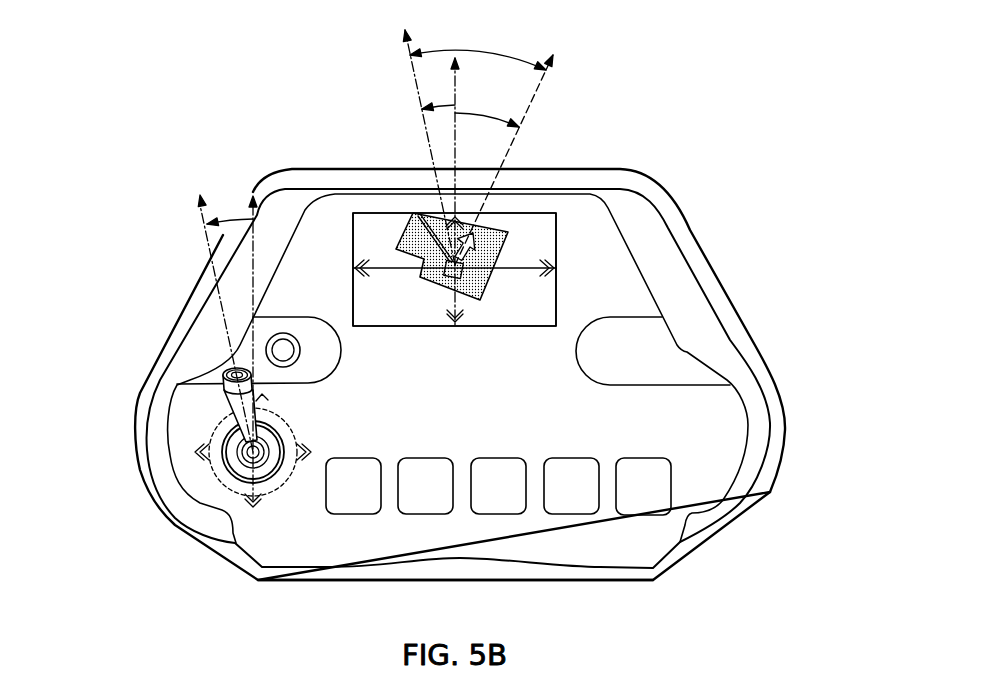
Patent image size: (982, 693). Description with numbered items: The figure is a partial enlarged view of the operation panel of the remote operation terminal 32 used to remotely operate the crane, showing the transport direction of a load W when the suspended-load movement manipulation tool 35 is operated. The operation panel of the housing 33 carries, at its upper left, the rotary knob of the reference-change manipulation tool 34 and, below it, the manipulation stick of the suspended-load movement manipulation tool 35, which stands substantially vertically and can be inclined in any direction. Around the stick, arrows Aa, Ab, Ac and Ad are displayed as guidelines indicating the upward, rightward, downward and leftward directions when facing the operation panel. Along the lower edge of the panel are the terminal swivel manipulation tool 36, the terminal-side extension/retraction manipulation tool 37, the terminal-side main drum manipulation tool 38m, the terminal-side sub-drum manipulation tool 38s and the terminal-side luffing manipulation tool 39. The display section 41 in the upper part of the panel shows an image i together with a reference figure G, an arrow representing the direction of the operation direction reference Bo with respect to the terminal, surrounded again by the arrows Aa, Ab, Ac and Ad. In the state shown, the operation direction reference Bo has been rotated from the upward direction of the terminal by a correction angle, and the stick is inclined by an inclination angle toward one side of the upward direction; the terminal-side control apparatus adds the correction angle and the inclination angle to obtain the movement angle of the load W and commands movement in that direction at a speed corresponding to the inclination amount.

The remote operation terminal 32 is at (133, 114).
The housing 33 is at (346, 189).
The reference-change manipulation tool 34 is at (297, 338).
The suspended-load movement manipulation tool 35 is at (230, 407).
The terminal swivel manipulation tool 36 is at (342, 508).
The terminal-side extension/retraction manipulation tool 37 is at (410, 508).
The terminal-side main drum manipulation tool 38m is at (485, 508).
The terminal-side sub-drum manipulation tool 38s is at (558, 508).
The terminal-side luffing manipulation tool 39 is at (627, 510).
The display section 41 is at (390, 213).
The image i is at (552, 220).
The load W is at (464, 276).
The reference figure G is at (477, 246).
The operation direction reference Bo is at (524, 151).
The arrow Aa is at (458, 214).
The arrow Ab is at (557, 268).
The arrow Ac is at (448, 318).
The arrow Ad is at (355, 262).